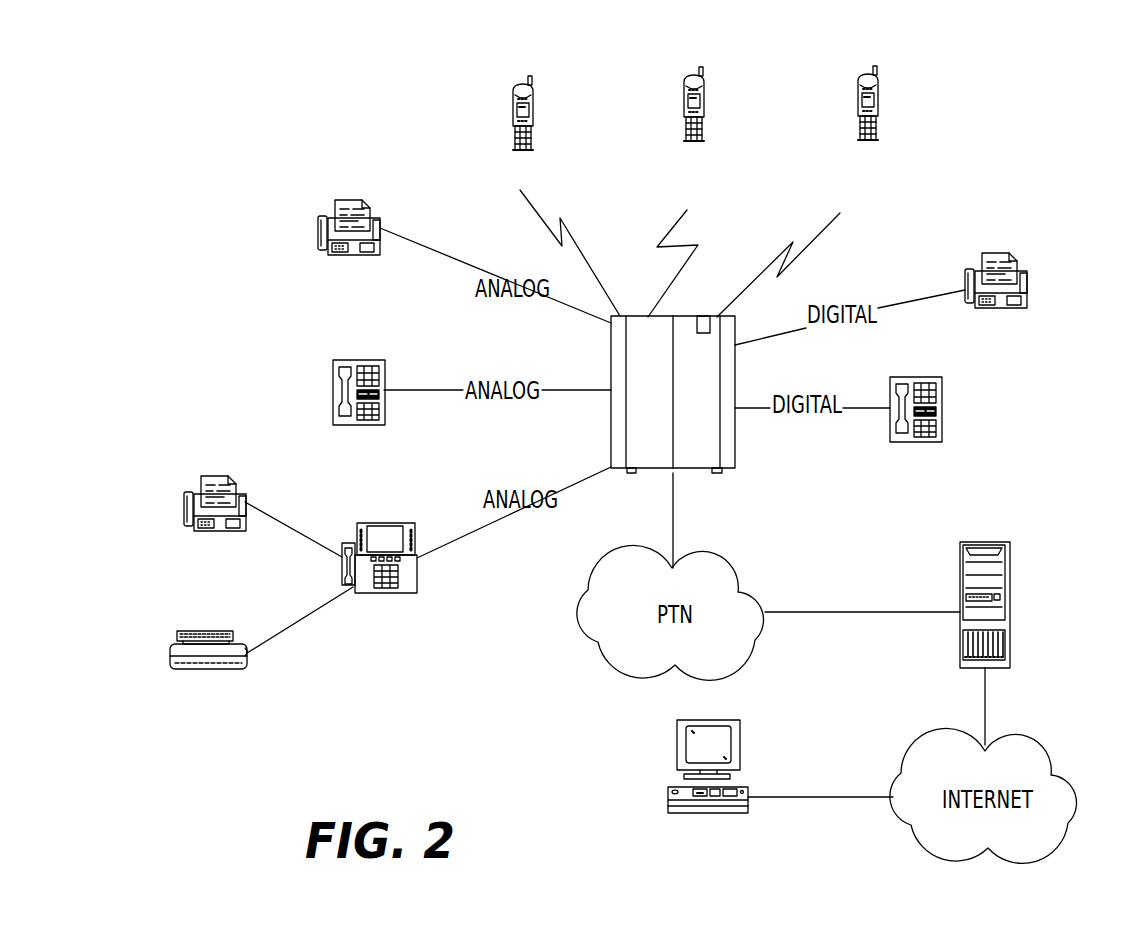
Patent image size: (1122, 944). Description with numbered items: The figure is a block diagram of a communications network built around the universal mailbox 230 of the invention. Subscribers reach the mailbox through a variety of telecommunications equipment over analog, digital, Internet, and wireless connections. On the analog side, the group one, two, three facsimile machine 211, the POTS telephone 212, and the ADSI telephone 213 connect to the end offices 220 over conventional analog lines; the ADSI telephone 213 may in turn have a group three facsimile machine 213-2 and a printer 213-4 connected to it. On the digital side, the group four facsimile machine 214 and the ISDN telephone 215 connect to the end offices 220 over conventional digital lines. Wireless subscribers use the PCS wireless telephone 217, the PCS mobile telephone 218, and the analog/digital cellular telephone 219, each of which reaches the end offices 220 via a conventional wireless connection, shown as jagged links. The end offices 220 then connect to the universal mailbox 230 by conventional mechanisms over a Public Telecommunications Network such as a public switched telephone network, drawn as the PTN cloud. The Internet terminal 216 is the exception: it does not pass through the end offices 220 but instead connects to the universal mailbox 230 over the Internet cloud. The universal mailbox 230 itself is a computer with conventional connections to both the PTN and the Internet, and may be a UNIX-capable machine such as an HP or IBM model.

The group 1, 2, 3 facsimile machine 211 is at (327, 215).
The Plain Old Telephone System (POTS) telephone 212 is at (333, 363).
The Analog Display Services Interface (ADSI) telephone 213 is at (409, 523).
The group 3 facsimile machine 213-2 is at (193, 486).
The printer 213-4 is at (170, 654).
The group 4 facsimile machine 214 is at (1031, 272).
The ISDN telephone 215 is at (944, 420).
The Internet terminal 216 is at (750, 790).
The Personal Communications Services (PCS) wireless telephone 217 is at (508, 100).
The PCS mobile telephone 218 is at (711, 108).
The analog/digital cellular telephone 219 is at (880, 104).
The end offices 220 is at (735, 457).
The universal mailbox 230 is at (1012, 630).